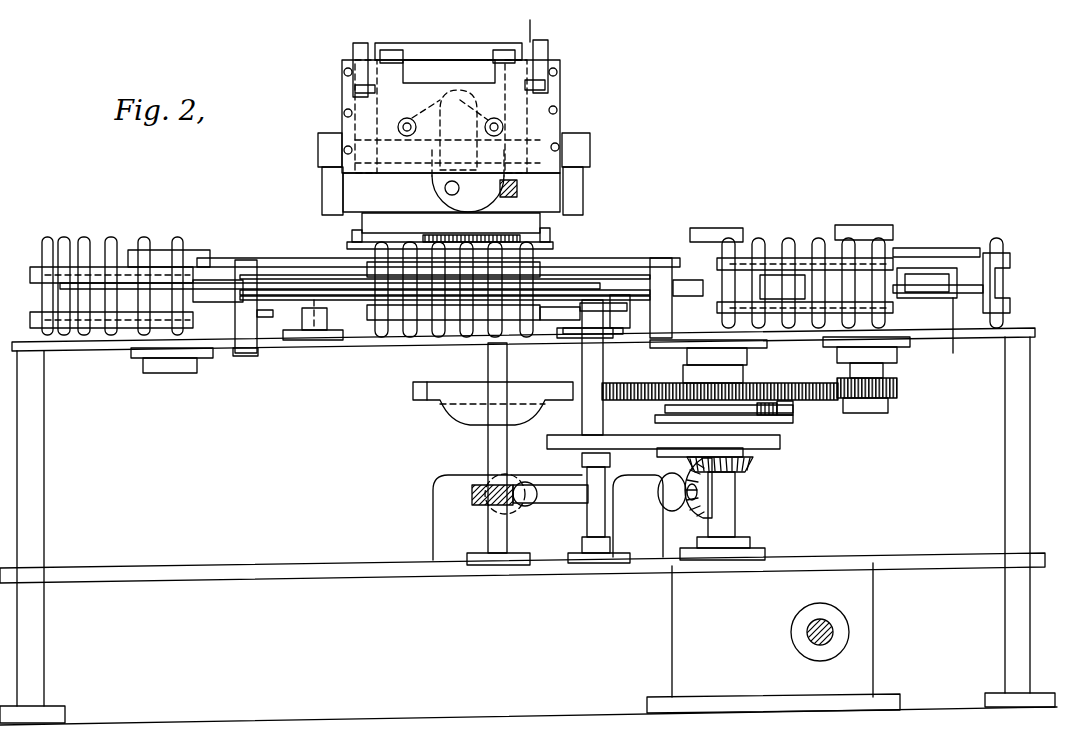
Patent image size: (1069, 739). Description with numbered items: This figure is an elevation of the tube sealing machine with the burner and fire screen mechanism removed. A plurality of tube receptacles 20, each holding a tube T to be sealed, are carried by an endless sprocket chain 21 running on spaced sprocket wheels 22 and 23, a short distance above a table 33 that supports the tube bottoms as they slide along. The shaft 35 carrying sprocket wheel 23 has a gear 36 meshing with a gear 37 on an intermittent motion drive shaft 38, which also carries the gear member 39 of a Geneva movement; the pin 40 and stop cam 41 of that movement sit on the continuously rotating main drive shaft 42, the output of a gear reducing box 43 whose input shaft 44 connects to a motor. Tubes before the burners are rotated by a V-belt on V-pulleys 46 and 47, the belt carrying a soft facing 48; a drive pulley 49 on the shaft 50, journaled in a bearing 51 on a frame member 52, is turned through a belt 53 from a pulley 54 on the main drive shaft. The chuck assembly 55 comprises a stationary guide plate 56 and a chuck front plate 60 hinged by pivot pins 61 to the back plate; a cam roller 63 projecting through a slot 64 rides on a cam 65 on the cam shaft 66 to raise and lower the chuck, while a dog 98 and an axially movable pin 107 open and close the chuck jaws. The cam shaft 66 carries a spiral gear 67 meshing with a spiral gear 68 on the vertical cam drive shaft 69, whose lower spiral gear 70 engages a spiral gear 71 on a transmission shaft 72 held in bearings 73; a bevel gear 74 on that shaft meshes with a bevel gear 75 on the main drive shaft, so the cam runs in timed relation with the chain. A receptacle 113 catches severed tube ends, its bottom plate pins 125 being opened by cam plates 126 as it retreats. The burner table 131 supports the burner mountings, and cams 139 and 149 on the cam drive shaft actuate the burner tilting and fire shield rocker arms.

The tube receptacles 20 is at (200, 290).
The endless sprocket chain 21 is at (922, 268).
The sprocket wheel 22 is at (263, 322).
The sprocket wheel 23 is at (965, 337).
The table 33 is at (1020, 343).
The shaft 35 is at (868, 370).
The gear 36 is at (893, 398).
The gear 37 is at (795, 405).
The intermittent motion drive shaft 38 is at (692, 388).
The gear member 39 is at (660, 409).
The pin 40 is at (796, 418).
The stop cam 41 is at (665, 420).
The main drive shaft 42 is at (728, 515).
The gear reducing box 43 is at (673, 636).
The input shaft 44 is at (834, 636).
The V-pulley 46 is at (355, 305).
The V-pulley 47 is at (636, 312).
The facing 48 is at (395, 300).
The drive pulley 49 is at (556, 437).
The shaft 50 is at (585, 470).
The bearing 51 is at (574, 566).
The frame member 52 is at (616, 572).
The belt 53 is at (650, 440).
The pulley 54 is at (772, 450).
The chuck assembly 55 is at (566, 96).
The stationary guide plate 56 is at (530, 21).
The chuck front plate 60 is at (530, 118).
The pivot pins 61 is at (548, 72).
The cam roller 63 is at (460, 98).
The slot 64 is at (435, 135).
The cam 65 is at (440, 188).
The cam shaft 66 is at (452, 195).
The spiral gear 67 is at (440, 203).
The spiral gear 68 is at (518, 190).
The cam drive shaft 69 is at (490, 365).
The spiral gear 70 is at (474, 500).
The spiral gear 71 is at (516, 470).
The transmission shaft 72 is at (560, 497).
The bearings 73 is at (433, 540).
The bevel gear 74 is at (692, 505).
The bevel gear 75 is at (735, 473).
The dog 98 is at (385, 168).
The pin 107 is at (374, 116).
The receptacle 113 is at (530, 222).
The pins 125 is at (348, 243).
The cam plates 126 is at (560, 247).
The burner table 131 is at (640, 258).
The cam 139 is at (428, 383).
The cam 149 is at (440, 440).
The tubes T is at (97, 235).